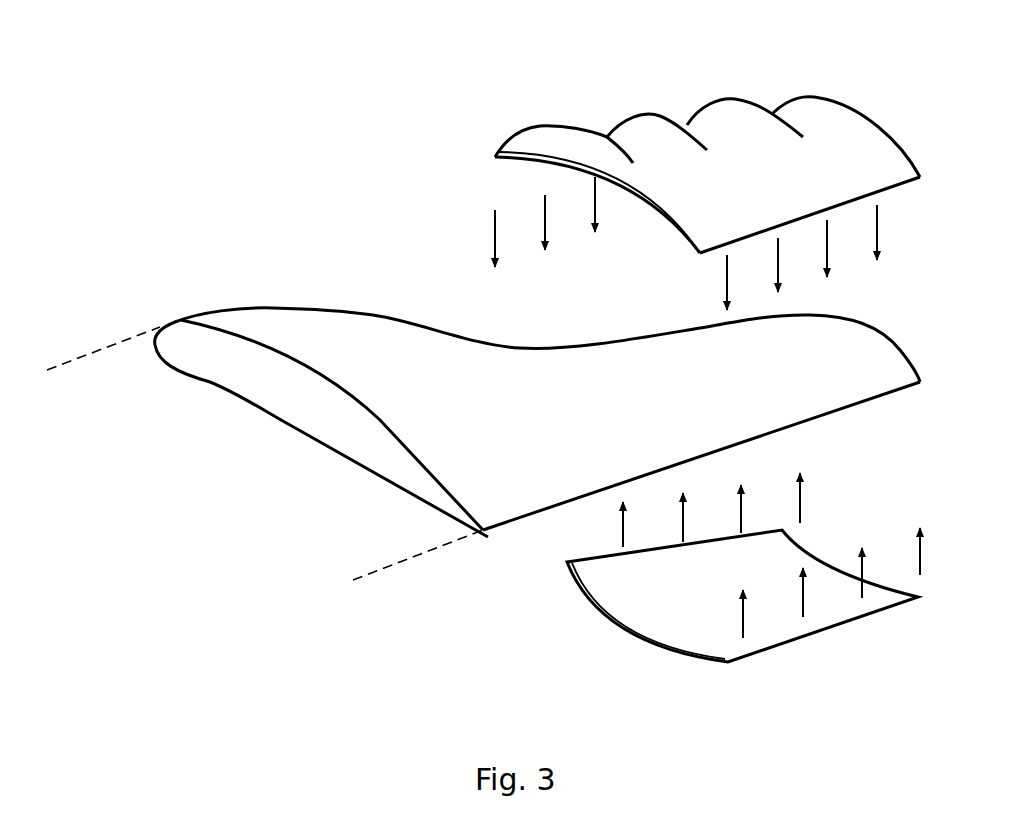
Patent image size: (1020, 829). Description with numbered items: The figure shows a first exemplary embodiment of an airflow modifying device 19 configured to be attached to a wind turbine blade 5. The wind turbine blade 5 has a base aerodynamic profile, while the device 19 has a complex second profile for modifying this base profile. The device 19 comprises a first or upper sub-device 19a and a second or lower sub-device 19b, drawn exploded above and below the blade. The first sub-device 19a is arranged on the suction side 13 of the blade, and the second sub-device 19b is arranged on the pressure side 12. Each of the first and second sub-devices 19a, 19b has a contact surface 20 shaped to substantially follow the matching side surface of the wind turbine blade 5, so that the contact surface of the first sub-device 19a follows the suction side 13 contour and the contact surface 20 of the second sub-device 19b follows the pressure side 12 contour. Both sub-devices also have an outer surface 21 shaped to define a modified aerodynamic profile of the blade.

The wind turbine blade 5 is at (340, 333).
The pressure side 12 is at (300, 433).
The suction side 13 is at (483, 444).
The device 19 is at (487, 147).
The first sub-device 19a is at (750, 100).
The second sub-device 19b is at (828, 633).
The contact surface 20 is at (742, 596).
The outer surface 21 is at (707, 175).